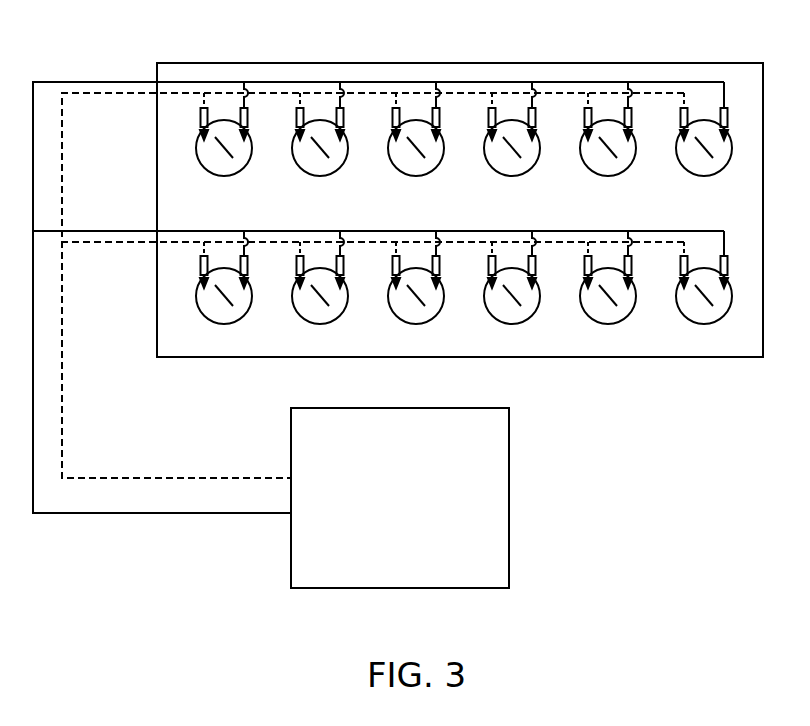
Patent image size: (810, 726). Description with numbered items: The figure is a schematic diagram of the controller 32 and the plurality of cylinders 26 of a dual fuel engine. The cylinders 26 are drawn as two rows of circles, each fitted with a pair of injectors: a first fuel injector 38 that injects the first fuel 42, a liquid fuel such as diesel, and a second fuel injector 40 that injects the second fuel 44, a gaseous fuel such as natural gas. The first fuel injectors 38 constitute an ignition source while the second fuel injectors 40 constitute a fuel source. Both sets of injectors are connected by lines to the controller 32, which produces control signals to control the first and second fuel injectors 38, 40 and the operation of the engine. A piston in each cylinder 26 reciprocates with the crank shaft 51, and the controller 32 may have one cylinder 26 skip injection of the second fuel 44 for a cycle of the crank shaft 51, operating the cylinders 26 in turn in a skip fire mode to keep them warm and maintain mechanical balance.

The cylinders 26 is at (447, 172).
The controller 32 is at (510, 497).
The first fuel injectors 38 is at (393, 108).
The second fuel injectors 40 is at (441, 108).
The first fuel 42 is at (201, 120).
The second fuel 44 is at (244, 119).
The crank shaft 51 is at (505, 283).